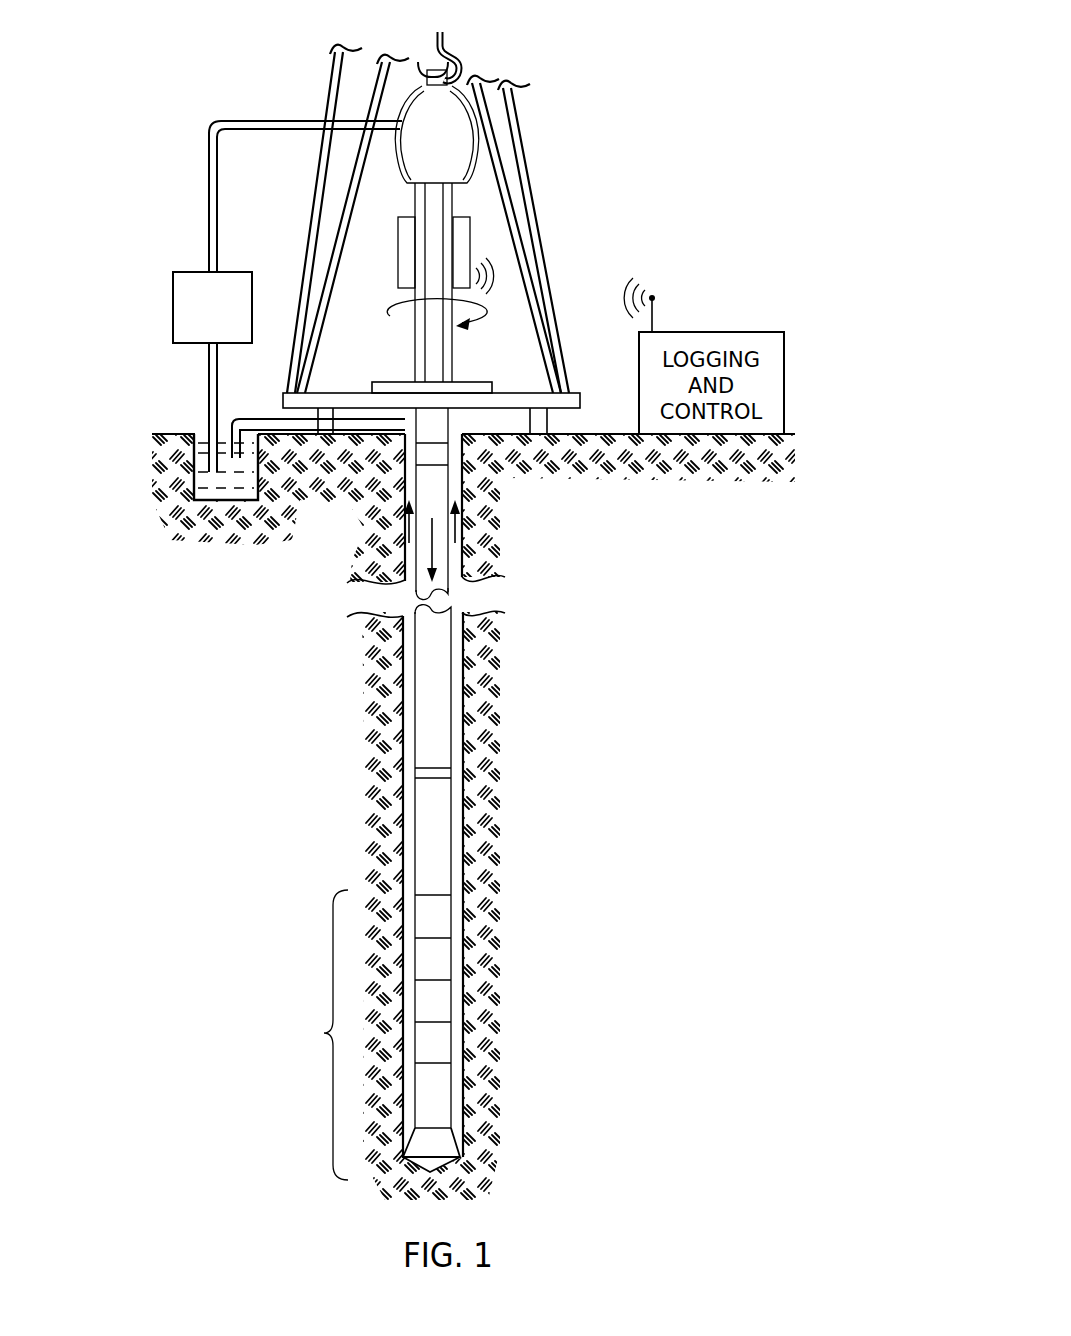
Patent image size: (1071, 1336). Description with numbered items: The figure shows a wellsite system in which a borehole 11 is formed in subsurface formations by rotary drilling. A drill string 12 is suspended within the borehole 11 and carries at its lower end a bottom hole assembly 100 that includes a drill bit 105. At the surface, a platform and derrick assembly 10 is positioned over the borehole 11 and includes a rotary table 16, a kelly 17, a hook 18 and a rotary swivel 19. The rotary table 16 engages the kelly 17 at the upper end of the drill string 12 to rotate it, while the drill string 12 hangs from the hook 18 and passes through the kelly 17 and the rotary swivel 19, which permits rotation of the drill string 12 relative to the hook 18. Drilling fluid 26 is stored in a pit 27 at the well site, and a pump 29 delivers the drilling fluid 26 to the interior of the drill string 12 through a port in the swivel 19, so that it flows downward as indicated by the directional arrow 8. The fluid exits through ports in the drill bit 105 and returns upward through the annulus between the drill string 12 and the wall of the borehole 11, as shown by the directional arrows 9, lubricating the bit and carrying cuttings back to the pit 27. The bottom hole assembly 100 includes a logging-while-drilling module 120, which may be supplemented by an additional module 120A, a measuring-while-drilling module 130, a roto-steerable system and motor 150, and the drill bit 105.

The directional arrow 8 is at (432, 556).
The directional arrows 9 is at (412, 532).
The platform and derrick assembly 10 is at (558, 106).
The borehole 11 is at (459, 428).
The drill string 12 is at (426, 425).
The rotary table 16 is at (460, 380).
The kelly 17 is at (428, 353).
The hook 18 is at (436, 38).
The rotary swivel 19 is at (408, 182).
The drilling fluid 26 is at (215, 500).
The pit 27 is at (199, 425).
The pump 29 is at (186, 344).
The bottom hole assembly 100 is at (327, 1033).
The drill bit 105 is at (437, 1146).
The logging-while-drilling module 120 is at (437, 966).
The additional logging-while-drilling module 120A is at (437, 1050).
The measuring-while-drilling module 130 is at (437, 1006).
The roto-steerable system and motor 150 is at (437, 1102).